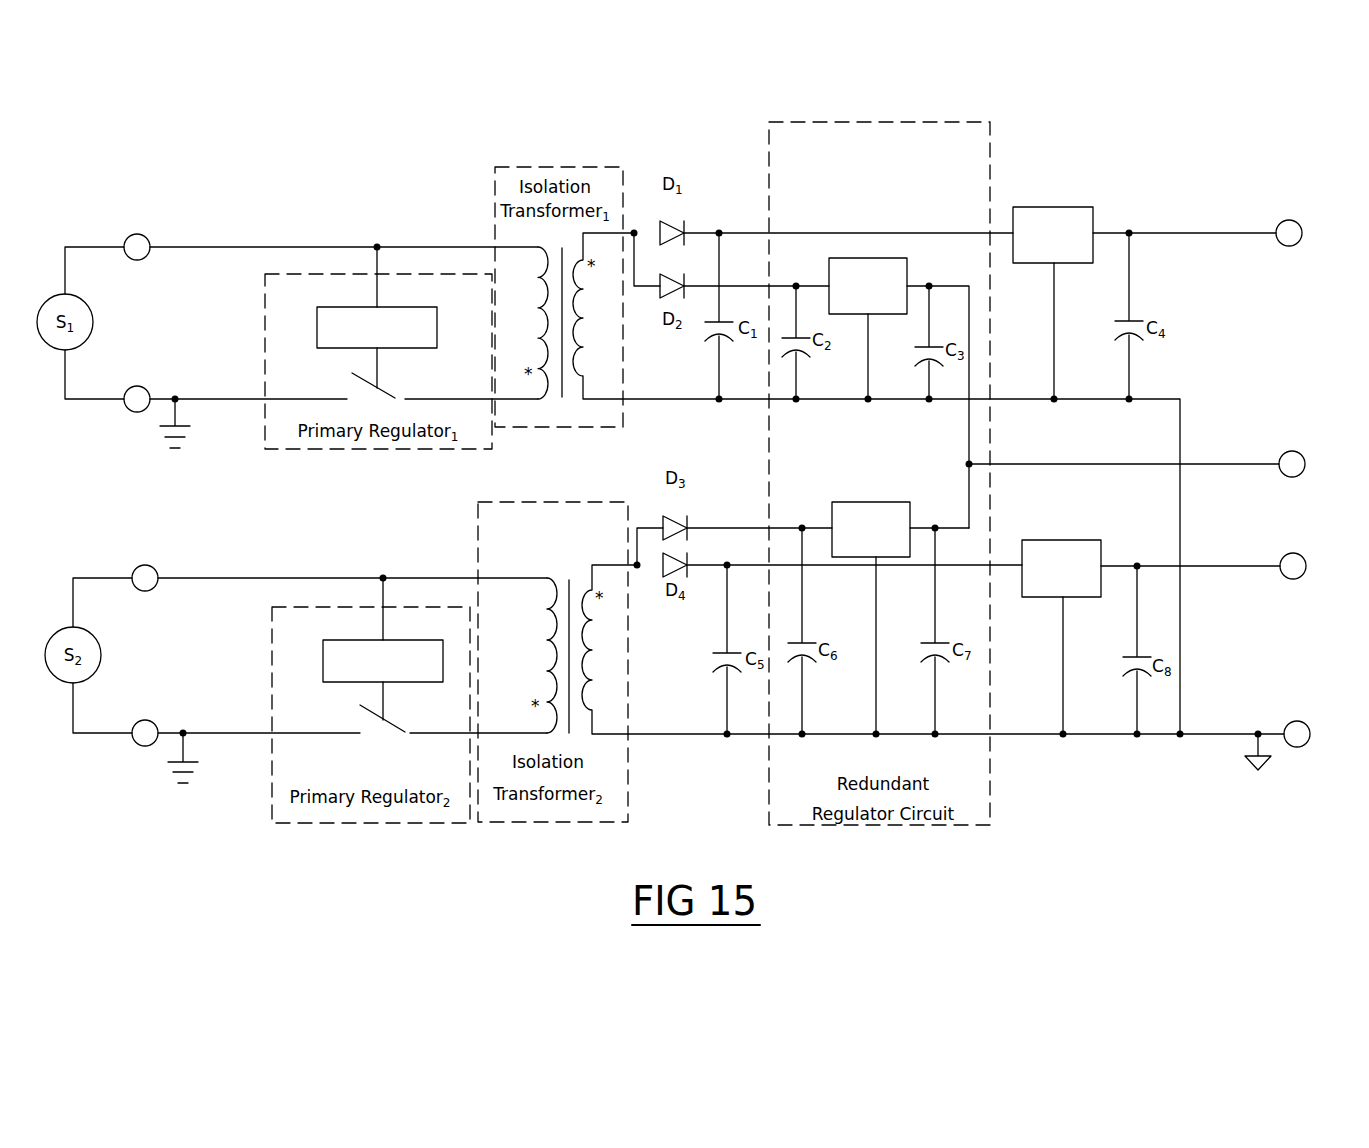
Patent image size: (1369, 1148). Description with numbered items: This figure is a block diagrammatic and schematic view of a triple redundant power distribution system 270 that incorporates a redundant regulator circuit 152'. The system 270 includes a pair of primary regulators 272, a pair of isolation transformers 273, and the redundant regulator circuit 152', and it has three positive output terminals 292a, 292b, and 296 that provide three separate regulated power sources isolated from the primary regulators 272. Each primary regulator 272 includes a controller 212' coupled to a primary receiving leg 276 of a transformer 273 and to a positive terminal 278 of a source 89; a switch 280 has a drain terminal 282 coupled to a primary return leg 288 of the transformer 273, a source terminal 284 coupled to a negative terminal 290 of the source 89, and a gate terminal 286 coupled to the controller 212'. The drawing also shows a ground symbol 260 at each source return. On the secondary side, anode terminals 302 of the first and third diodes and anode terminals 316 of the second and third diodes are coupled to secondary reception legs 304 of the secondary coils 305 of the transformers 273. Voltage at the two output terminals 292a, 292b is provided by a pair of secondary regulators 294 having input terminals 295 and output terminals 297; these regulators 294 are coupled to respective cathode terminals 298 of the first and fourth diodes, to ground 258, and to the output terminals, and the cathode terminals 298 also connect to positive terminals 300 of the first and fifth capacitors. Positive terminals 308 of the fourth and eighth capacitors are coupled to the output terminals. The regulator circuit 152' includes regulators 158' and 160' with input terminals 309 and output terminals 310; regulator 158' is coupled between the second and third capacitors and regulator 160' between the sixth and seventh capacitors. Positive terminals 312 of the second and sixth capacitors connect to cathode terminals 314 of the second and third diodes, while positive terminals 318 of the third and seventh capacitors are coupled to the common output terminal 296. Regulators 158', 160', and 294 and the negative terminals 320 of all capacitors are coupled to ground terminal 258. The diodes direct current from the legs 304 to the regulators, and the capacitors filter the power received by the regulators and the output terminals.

The sources 89 is at (55, 348).
The redundant regulator circuit 152' is at (879, 456).
The regulator 158' is at (868, 297).
The regulator 160' is at (871, 600).
The controller 212' is at (388, 483).
The ground 258 is at (1265, 740).
The ground 260 is at (173, 407).
The triple redundant power distribution system 270 is at (1192, 172).
The primary regulator 272 is at (290, 273).
The isolation transformer 273 is at (545, 167).
The primary receiving leg 276 is at (508, 578).
The positive terminal 278 is at (137, 261).
The switch 280 is at (388, 398).
The drain terminal 282 is at (405, 400).
The source terminal 284 is at (347, 398).
The gate terminal 286 is at (380, 388).
The primary return leg 288 is at (533, 400).
The negative terminal 290 is at (135, 386).
The output terminal 292a is at (1287, 220).
The output terminal 292b is at (1295, 580).
The secondary regulator 294 is at (1035, 207).
The input terminal 295 is at (1013, 238).
The common output terminal 296 is at (1296, 478).
The output terminal 297 is at (1095, 232).
The cathode terminal 298 is at (690, 233).
The positive terminal 300 is at (737, 288).
The anode terminal 302 is at (655, 236).
The secondary reception leg 304 is at (620, 232).
The secondary coil 305 is at (592, 375).
The positive terminal 308 is at (1131, 321).
The input terminal 309 is at (822, 282).
The output terminal 310 is at (910, 285).
The positive terminal 312 is at (796, 330).
The cathode terminal 314 is at (690, 298).
The anode terminal 316 is at (661, 300).
The positive terminal 318 is at (925, 333).
The negative terminal 320 is at (733, 342).